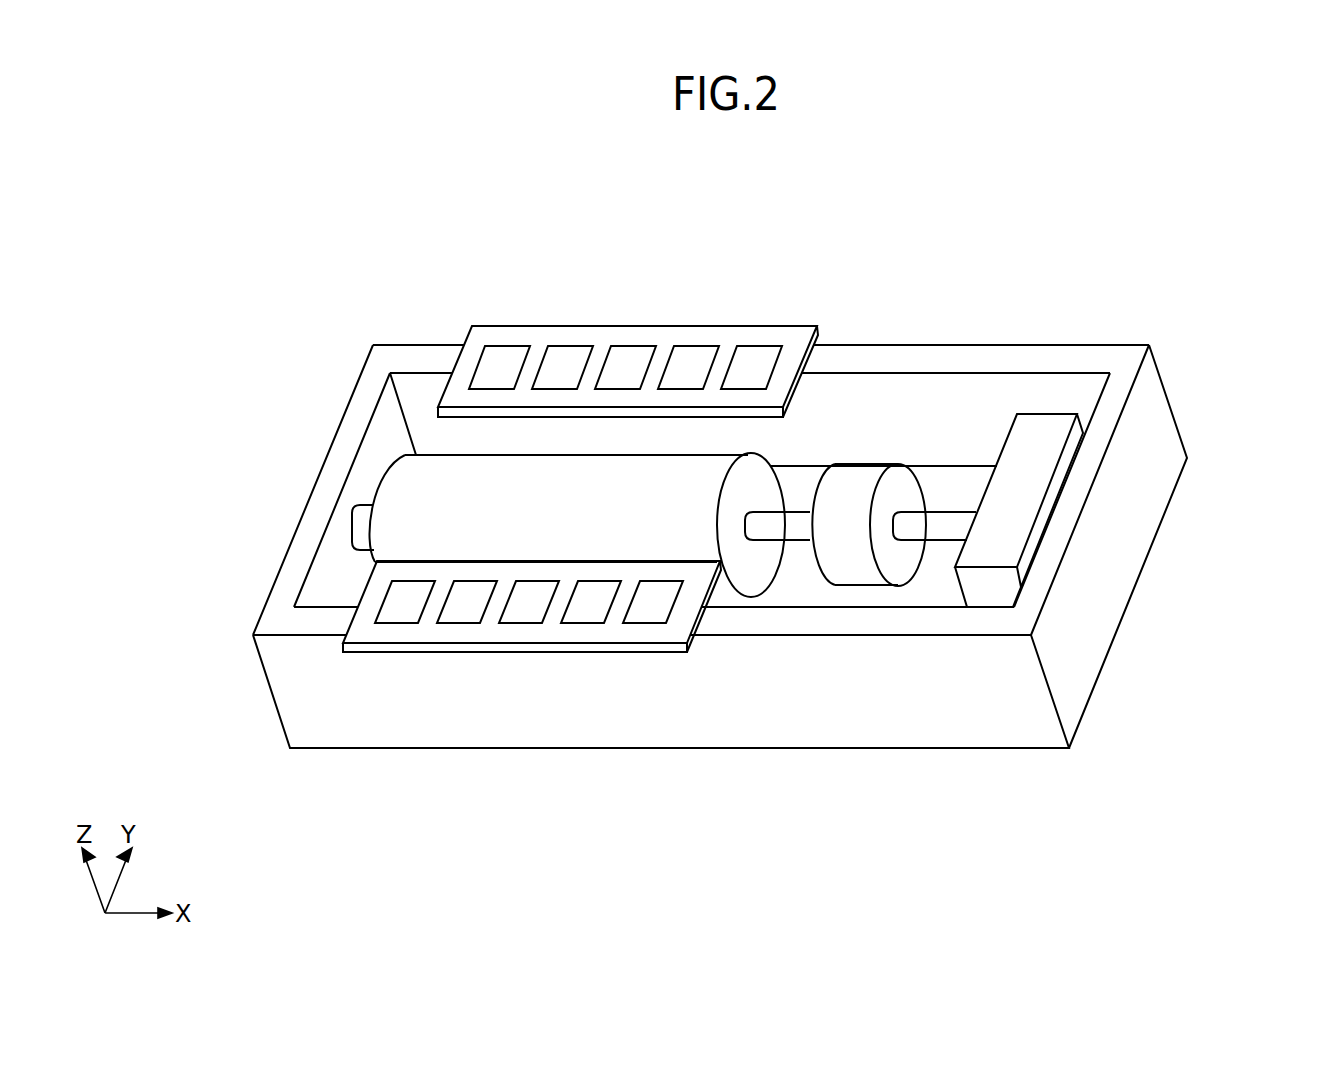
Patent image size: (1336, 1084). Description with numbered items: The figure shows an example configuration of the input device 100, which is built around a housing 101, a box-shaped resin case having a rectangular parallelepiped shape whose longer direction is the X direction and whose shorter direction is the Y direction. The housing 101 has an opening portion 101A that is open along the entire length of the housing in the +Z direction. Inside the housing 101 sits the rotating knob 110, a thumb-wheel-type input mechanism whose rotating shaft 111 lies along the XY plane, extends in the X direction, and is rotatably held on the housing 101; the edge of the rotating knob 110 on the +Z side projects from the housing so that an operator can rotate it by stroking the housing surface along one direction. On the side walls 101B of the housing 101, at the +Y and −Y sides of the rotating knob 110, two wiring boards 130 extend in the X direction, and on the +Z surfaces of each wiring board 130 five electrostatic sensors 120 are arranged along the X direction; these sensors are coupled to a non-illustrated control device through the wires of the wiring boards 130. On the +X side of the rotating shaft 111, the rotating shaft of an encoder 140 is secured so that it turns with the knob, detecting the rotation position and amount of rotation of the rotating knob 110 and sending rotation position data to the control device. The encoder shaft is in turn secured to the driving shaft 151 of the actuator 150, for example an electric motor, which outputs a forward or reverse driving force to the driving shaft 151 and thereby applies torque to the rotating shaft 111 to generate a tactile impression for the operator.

The input device 100 is at (1326, 195).
The housing 101 is at (720, 539).
The opening portion 101A is at (992, 373).
The side walls 101B is at (1017, 725).
The rotating knob 110 is at (407, 460).
The rotating shaft 111 is at (358, 522).
The electrostatic sensors 120 is at (750, 368).
The wiring boards 130 is at (634, 337).
The encoder 140 is at (845, 525).
The actuator 150 is at (1017, 493).
The driving shaft 151 is at (935, 525).